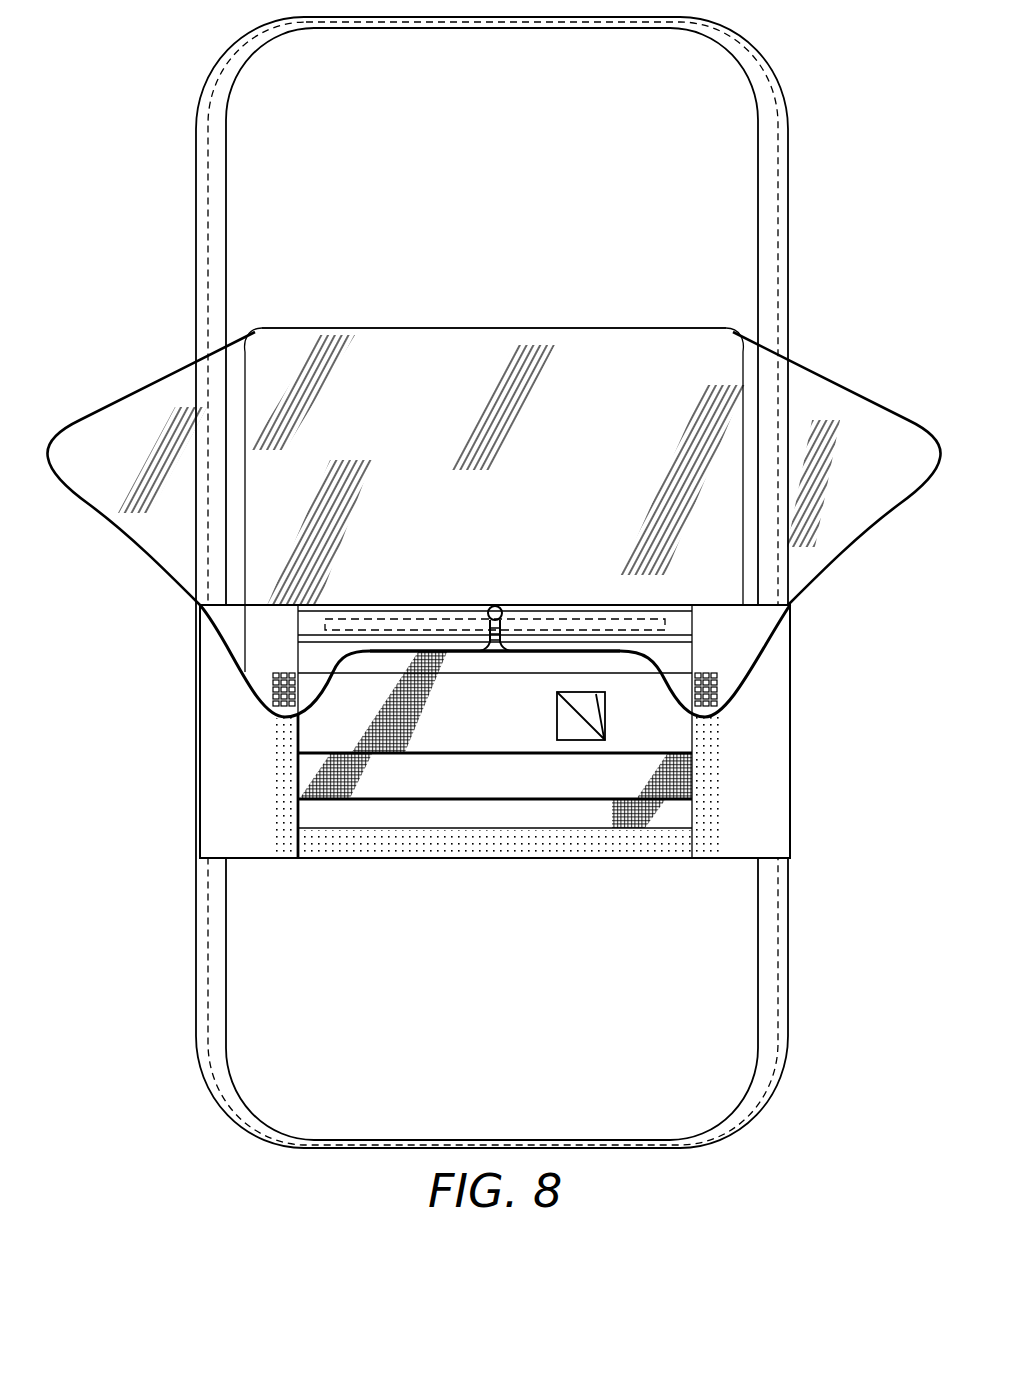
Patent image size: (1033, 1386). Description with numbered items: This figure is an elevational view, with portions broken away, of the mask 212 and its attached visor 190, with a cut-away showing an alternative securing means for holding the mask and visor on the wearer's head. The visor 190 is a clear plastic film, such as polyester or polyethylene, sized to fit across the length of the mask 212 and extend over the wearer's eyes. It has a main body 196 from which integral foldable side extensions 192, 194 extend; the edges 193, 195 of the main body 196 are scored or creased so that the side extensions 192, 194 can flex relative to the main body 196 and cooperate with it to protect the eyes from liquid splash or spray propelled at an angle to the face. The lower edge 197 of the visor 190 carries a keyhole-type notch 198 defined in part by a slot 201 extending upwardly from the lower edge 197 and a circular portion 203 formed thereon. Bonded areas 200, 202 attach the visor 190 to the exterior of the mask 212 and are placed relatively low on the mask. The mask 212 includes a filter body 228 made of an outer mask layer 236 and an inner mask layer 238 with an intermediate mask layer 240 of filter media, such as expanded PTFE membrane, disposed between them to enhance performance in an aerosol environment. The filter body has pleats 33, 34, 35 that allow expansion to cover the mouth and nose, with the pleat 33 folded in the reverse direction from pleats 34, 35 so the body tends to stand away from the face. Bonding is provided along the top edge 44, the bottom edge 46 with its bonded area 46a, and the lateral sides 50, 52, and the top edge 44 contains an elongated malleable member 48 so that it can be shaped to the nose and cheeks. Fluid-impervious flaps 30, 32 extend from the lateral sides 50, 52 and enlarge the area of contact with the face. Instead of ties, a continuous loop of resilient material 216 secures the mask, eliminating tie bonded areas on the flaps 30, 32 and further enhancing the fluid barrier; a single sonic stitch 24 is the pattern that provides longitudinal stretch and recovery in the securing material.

The continuous loop of resilient material 216 is at (228, 138).
The single sonic stitch 24 is at (208, 555).
The visor 190 is at (648, 318).
The foldable side extension 192 is at (175, 388).
The edge of main body 193 is at (256, 330).
The foldable side extension 194 is at (830, 392).
The edge of main body 195 is at (738, 330).
The main body 196 is at (350, 328).
The lower edge 197 is at (572, 648).
The notch 198 is at (497, 606).
The slot 201 is at (482, 642).
The circular portion 203 is at (505, 618).
The top edge 44 is at (440, 608).
The elongated malleable member 48 is at (397, 623).
The pleat 33 is at (393, 668).
The pleat 34 is at (430, 753).
The pleat 35 is at (474, 801).
The outer mask layer 236 is at (606, 698).
The inner mask layer 238 is at (556, 722).
The intermediate mask layer 240 is at (600, 725).
The bonded area 200 is at (272, 698).
The bonded area 202 is at (720, 698).
The lateral side 50 is at (298, 745).
The lateral side 52 is at (696, 745).
The flap 30 is at (198, 775).
The flap 32 is at (790, 703).
The mask 212 is at (814, 773).
The filter body 228 is at (340, 866).
The bottom edge 46 is at (398, 858).
The bonded area 46a is at (640, 856).